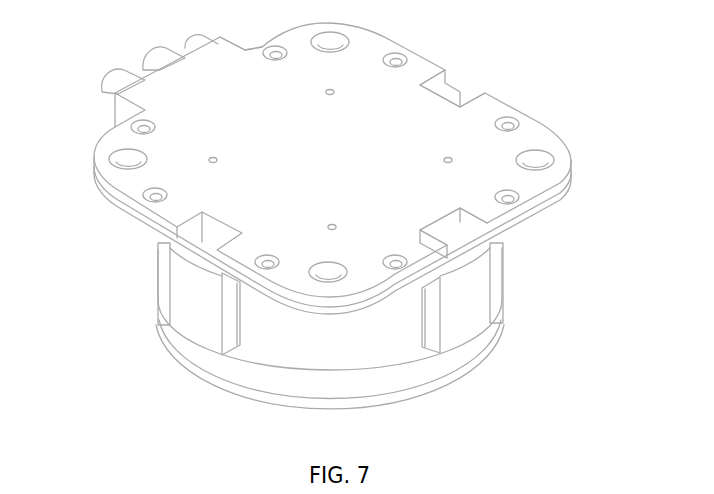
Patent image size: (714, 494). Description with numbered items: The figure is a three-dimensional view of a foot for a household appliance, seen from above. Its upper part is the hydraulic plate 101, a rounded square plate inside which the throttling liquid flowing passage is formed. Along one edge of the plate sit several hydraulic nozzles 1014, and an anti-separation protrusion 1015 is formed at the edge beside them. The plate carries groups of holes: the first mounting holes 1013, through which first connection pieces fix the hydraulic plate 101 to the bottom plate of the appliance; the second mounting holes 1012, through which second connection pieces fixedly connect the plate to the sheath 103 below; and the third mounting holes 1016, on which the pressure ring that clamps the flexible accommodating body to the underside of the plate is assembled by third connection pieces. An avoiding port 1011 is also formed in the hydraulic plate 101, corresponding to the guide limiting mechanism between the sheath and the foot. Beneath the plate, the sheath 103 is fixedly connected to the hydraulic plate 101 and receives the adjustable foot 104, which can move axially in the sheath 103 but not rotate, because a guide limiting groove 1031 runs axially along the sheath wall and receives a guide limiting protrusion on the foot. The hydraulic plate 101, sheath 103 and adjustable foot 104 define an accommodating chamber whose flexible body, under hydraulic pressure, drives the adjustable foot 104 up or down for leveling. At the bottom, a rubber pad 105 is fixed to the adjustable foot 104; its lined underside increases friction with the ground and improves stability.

The hydraulic plate 101 is at (360, 52).
The avoiding port 1011 is at (457, 91).
The second mounting hole 1012 is at (537, 162).
The first mounting hole 1013 is at (489, 222).
The hydraulic nozzle 1014 is at (114, 86).
The anti-separation protrusion 1015 is at (221, 36).
The third mounting hole 1016 is at (209, 162).
The sheath 103 is at (345, 347).
The guide limiting groove 1031 is at (198, 297).
The adjustable foot 104 is at (417, 377).
The rubber pad 105 is at (490, 342).